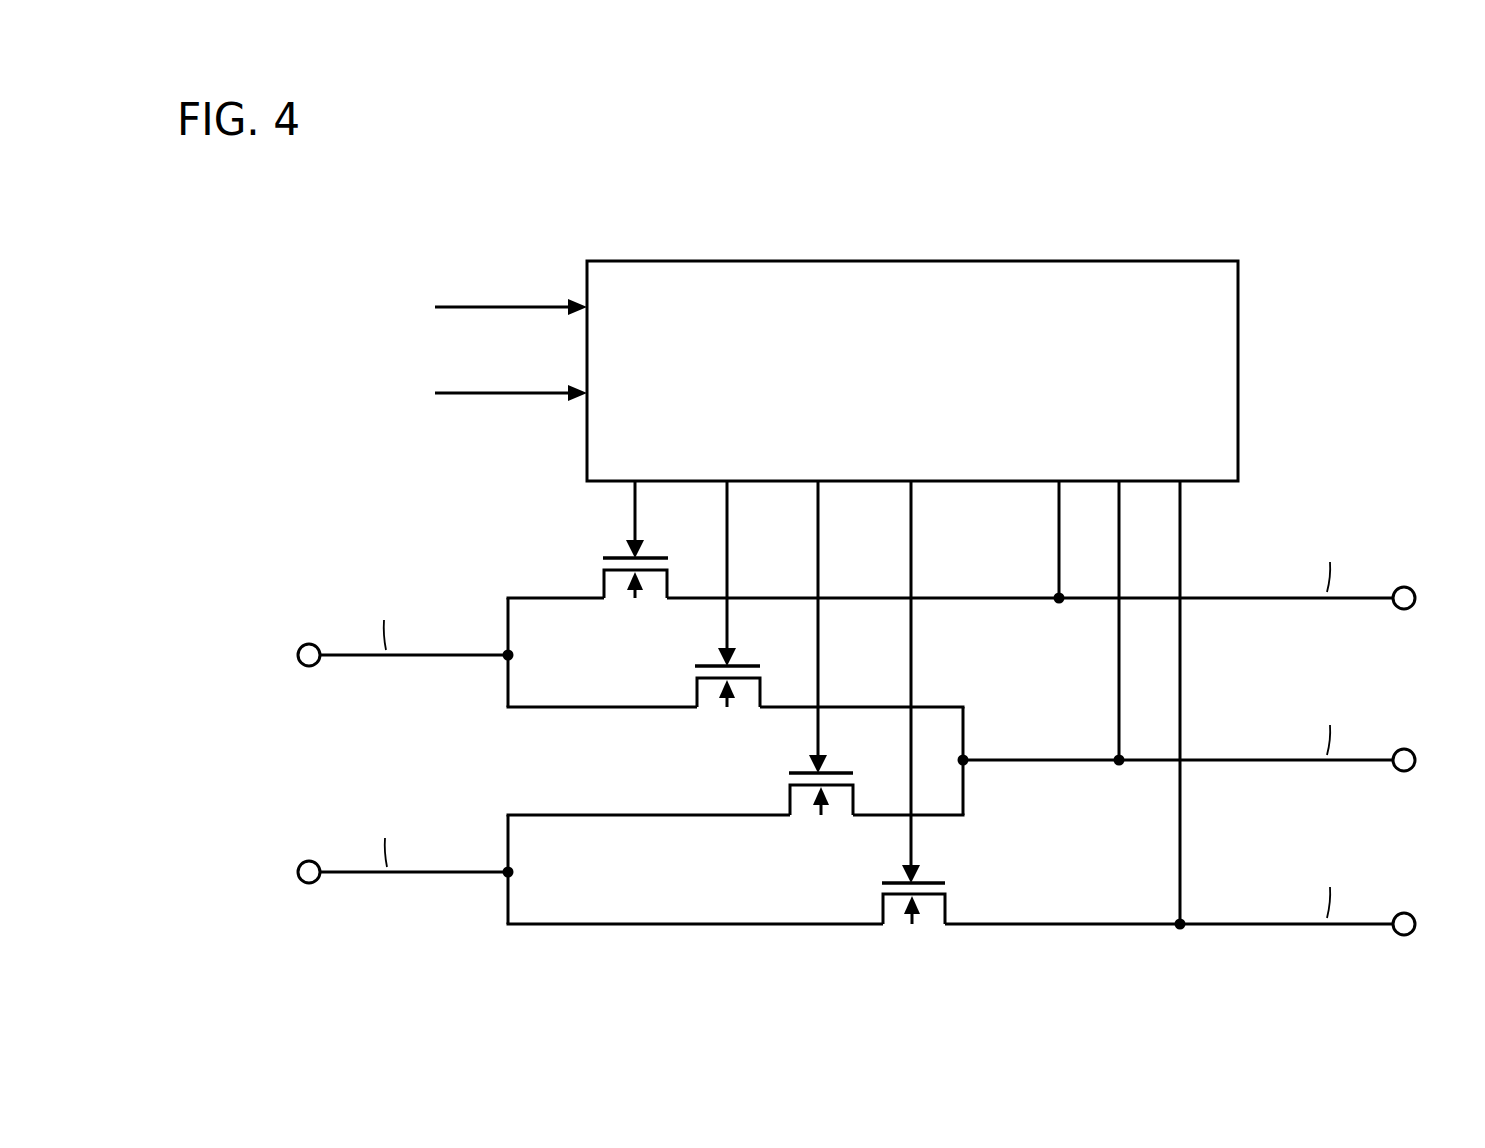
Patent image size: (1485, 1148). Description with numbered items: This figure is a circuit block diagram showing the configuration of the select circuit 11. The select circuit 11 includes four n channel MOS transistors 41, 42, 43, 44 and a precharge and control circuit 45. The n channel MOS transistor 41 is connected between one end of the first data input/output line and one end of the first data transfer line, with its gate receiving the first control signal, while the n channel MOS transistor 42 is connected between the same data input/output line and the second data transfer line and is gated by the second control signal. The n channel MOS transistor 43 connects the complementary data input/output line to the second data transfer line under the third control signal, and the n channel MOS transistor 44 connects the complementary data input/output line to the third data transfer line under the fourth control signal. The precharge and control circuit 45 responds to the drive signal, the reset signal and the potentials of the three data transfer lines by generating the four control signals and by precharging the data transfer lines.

The select circuit 11 is at (306, 223).
The precharge and control circuit 45 is at (1238, 336).
The n channel MOS transistor 41 is at (603, 580).
The n channel MOS transistor 42 is at (697, 690).
The n channel MOS transistor 43 is at (790, 796).
The n channel MOS transistor 44 is at (883, 903).